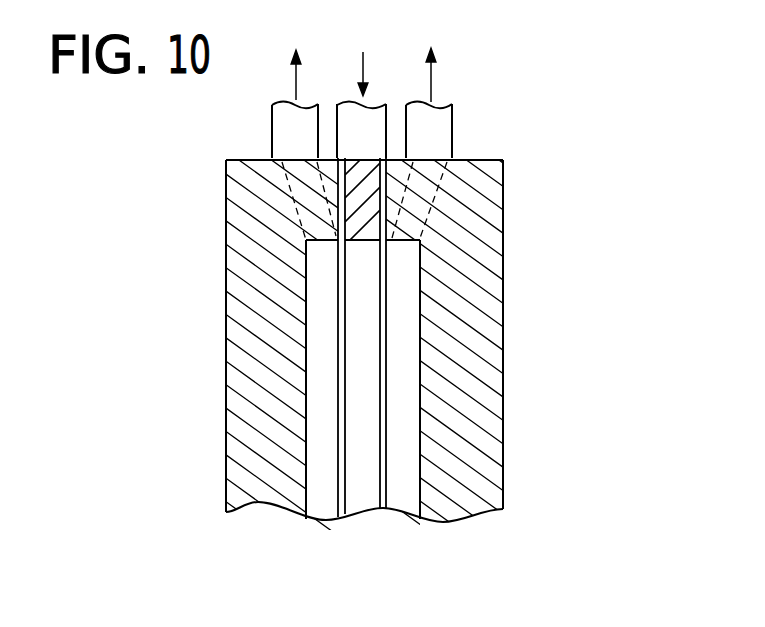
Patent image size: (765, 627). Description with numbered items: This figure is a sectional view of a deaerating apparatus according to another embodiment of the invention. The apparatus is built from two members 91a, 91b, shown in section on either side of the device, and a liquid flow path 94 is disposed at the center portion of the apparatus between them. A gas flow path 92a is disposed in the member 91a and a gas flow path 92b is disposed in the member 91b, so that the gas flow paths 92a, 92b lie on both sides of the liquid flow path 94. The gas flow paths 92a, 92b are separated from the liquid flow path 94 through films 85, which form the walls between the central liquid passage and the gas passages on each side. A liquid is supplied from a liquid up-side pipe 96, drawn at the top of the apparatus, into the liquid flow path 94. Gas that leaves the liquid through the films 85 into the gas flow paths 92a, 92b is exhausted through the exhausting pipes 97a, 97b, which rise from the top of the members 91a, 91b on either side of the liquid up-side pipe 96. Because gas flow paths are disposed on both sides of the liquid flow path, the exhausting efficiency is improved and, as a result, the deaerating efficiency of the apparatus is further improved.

The film 85 is at (336, 505).
The member 91a is at (226, 290).
The member 91b is at (495, 283).
The gas flow path 92a is at (313, 418).
The gas flow path 92b is at (407, 410).
The liquid flow path 94 is at (363, 502).
The liquid up-side pipe 96 is at (368, 112).
The exhausting pipe 97a is at (272, 131).
The exhausting pipe 97b is at (447, 143).